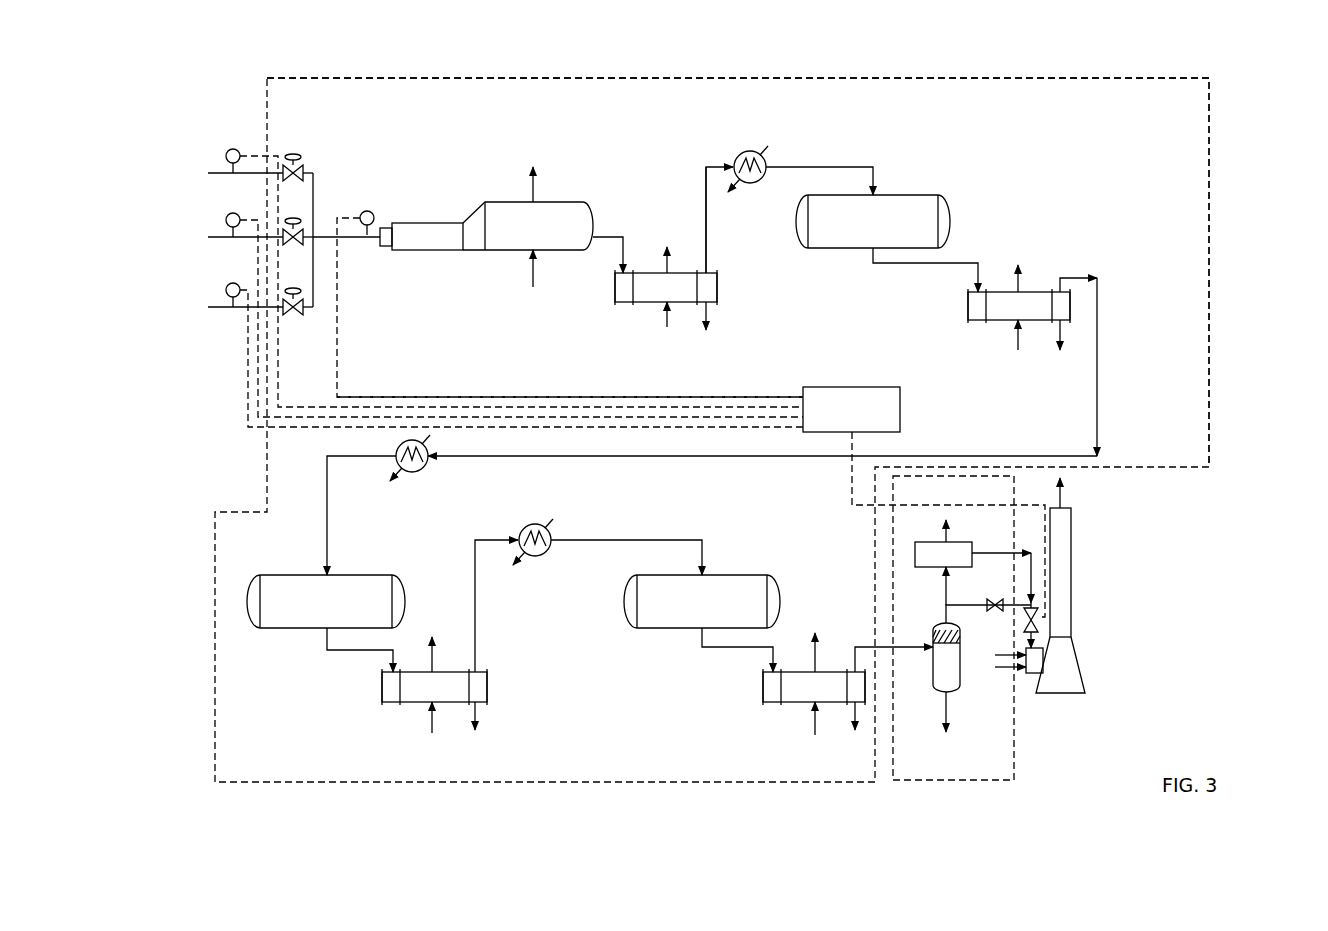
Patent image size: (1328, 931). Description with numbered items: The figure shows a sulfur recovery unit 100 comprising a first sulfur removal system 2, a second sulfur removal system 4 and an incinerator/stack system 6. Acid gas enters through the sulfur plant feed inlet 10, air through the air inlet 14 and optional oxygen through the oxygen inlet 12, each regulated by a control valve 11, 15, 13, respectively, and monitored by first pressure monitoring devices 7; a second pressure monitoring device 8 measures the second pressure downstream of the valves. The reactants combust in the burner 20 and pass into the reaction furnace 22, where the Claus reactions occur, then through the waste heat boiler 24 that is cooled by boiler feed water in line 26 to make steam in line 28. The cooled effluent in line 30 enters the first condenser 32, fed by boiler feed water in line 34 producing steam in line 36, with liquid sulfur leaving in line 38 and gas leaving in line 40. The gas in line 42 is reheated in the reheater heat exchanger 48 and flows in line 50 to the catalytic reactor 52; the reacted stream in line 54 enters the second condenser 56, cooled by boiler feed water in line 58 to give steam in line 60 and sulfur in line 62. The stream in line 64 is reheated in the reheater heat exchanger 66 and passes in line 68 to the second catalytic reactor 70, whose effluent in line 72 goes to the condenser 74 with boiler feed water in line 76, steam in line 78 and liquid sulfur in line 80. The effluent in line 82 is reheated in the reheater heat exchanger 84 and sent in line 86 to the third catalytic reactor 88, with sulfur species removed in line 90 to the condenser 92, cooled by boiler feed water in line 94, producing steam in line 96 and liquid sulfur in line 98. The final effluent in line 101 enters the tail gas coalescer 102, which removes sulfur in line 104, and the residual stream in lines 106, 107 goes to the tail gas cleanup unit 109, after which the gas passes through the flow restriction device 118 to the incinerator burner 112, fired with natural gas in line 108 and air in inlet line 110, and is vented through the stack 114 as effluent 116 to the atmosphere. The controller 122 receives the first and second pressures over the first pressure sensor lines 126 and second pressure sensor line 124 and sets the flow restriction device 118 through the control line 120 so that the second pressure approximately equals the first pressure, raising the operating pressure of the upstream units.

The first sulfur removal system 2 is at (1053, 78).
The second sulfur removal system 4 is at (1014, 760).
The incinerator/stack system 6 is at (1071, 540).
The first pressure monitoring device 7 is at (233, 149).
The second pressure monitoring device 8 is at (367, 211).
The sulfur plant feed inlet 10 is at (225, 173).
The control valve 11 is at (293, 157).
The oxygen inlet 12 is at (228, 307).
The control valve 13 is at (293, 291).
The air inlet 14 is at (228, 237).
The control valve 15 is at (293, 221).
The burner 20 is at (386, 228).
The reaction furnace 22 is at (435, 250).
The waste heat boiler 24 is at (562, 202).
The boiler feed water line 26 is at (534, 275).
The steam line 28 is at (537, 196).
The cooled effluent line 30 is at (610, 237).
The first condenser 32 is at (666, 287).
The boiler feed water line 34 is at (665, 322).
The steam line 36 is at (669, 270).
The liquid sulfur line 38 is at (710, 310).
The gaseous effluent line 40 is at (707, 264).
The reheater inlet line 42 is at (705, 206).
The reheater heat exchanger 48 is at (738, 156).
The reheated stream line 50 is at (875, 172).
The catalytic reactor 52 is at (954, 214).
The reacted stream line 54 is at (930, 263).
The second condenser 56 is at (1019, 306).
The boiler feed water line 58 is at (1016, 334).
The steam line 60 is at (1021, 289).
The sulfur recovery line 62 is at (1064, 328).
The effluent line 64 is at (1098, 376).
The reheater heat exchanger 66 is at (428, 448).
The reheated stream line 68 is at (327, 526).
The second catalytic reactor 70 is at (304, 575).
The effluent line 72 is at (345, 650).
The condenser 74 is at (434, 687).
The boiler feed water line 76 is at (436, 730).
The steam line 78 is at (436, 666).
The liquid sulfur line 80 is at (478, 704).
The effluent stream line 82 is at (476, 615).
The reheater heat exchanger 84 is at (550, 524).
The reheated stream line 86 is at (636, 540).
The third catalytic reactor 88 is at (720, 575).
The reactor outlet line 90 is at (702, 636).
The condenser 92 is at (814, 687).
The boiler feed water line 94 is at (813, 730).
The steam line 96 is at (818, 670).
The liquid sulfur line 98 is at (856, 708).
The sulfur recovery unit 100 is at (1228, 147).
The final effluent line 101 is at (866, 647).
The tail gas coalescer 102 is at (931, 666).
The sulfur removal line 104 is at (948, 706).
The residual stream line 106 is at (946, 606).
The residual stream line 107 is at (946, 582).
The natural gas line 108 is at (1014, 655).
The tail gas cleanup unit 109 is at (952, 542).
The air inlet line 110 is at (1010, 670).
The incinerator burner 112 is at (1034, 680).
The stack 114 is at (1071, 582).
The effluent 116 is at (1108, 512).
The flow restriction device 118 is at (1040, 622).
The control line 120 is at (935, 505).
The controller 122 is at (854, 387).
The second pressure sensor line 124 is at (455, 397).
The first pressure sensor lines 126 is at (250, 368).